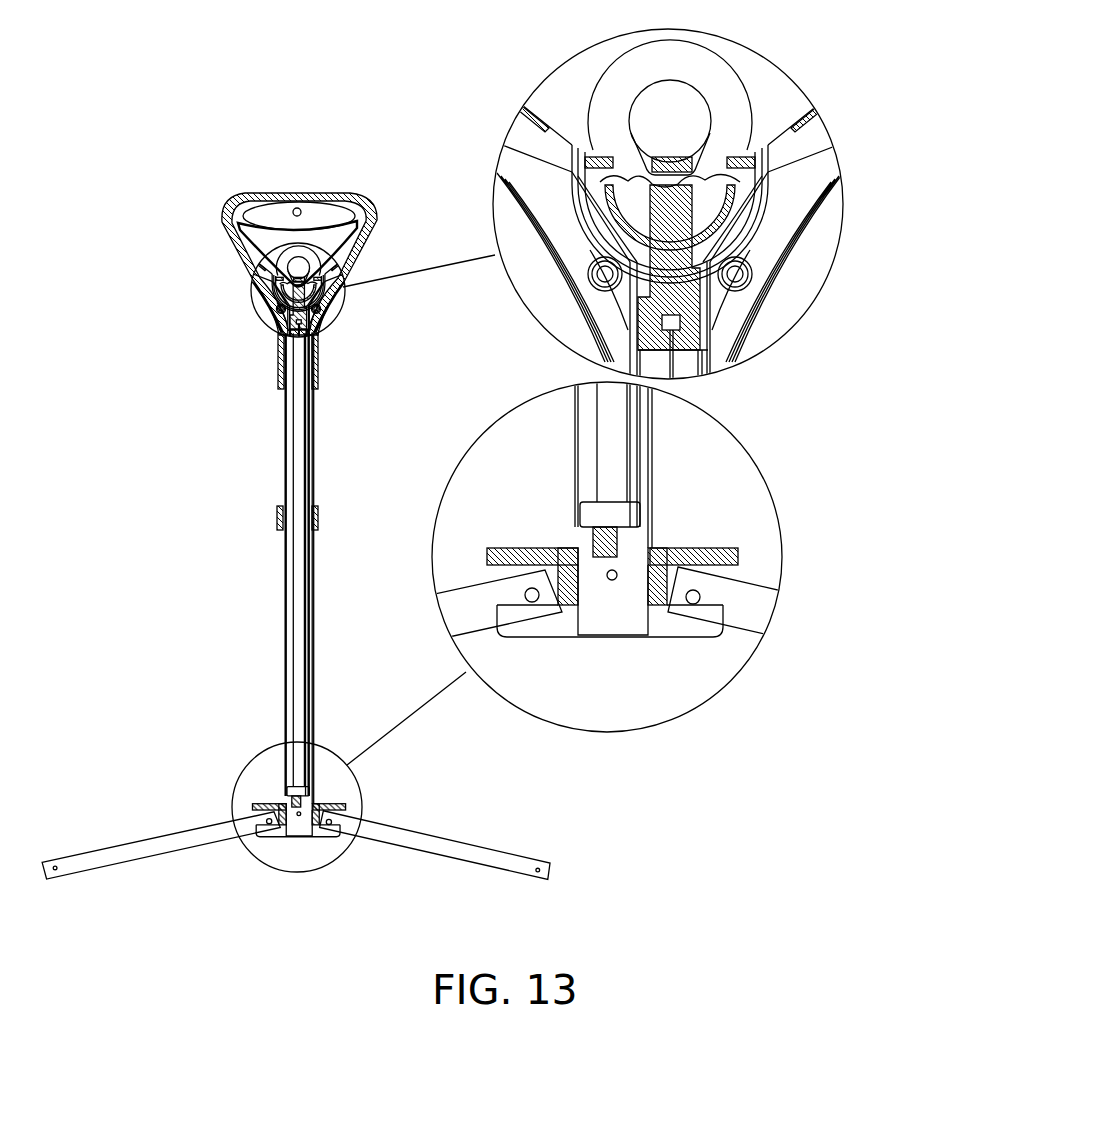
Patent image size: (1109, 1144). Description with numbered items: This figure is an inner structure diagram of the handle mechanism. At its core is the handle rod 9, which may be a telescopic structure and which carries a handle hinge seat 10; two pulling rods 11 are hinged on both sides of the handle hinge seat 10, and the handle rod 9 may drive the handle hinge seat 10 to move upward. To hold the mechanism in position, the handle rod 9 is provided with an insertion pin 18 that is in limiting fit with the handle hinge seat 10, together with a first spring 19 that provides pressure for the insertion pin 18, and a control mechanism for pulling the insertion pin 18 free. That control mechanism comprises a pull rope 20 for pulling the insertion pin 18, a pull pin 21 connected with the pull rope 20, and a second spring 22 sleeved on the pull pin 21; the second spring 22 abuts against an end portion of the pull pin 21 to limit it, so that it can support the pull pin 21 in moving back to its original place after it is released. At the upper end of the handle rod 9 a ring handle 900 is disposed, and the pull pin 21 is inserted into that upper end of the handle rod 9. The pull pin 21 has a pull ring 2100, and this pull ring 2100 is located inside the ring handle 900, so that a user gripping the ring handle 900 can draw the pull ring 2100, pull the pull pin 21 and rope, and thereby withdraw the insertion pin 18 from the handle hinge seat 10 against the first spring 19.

The ring handle 900 is at (333, 197).
The pull ring 2100 is at (723, 97).
The pull pin 21 is at (672, 224).
The second spring 22 is at (746, 272).
The pull rope 20 is at (652, 460).
The first spring 19 is at (616, 574).
The insertion pin 18 is at (603, 537).
The handle rod 9 is at (284, 667).
The handle hinge seat 10 is at (252, 805).
The pulling rod 11 is at (92, 866).